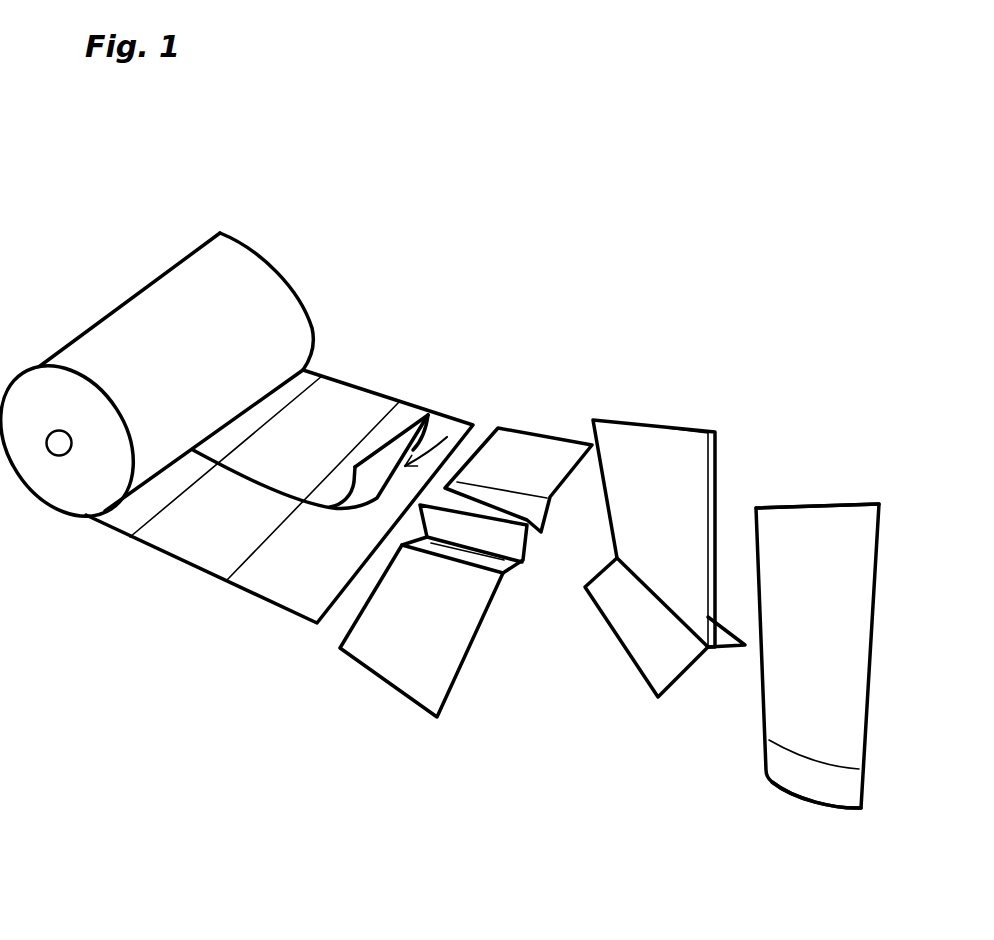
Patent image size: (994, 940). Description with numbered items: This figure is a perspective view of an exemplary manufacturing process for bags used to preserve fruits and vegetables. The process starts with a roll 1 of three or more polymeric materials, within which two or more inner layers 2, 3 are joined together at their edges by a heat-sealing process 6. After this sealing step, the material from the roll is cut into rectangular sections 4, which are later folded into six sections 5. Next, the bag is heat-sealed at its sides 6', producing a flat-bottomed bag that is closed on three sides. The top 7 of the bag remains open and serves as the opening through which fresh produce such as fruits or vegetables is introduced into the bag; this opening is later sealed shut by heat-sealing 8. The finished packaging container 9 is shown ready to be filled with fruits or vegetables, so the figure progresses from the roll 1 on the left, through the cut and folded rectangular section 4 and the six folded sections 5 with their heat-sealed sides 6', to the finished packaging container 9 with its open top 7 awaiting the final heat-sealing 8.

The roll 1 is at (242, 313).
The inner layer 2 is at (401, 421).
The inner layer 3 is at (440, 487).
The rectangular section 4 is at (193, 525).
The six sections 5 is at (505, 452).
The heat-sealing process 6 is at (310, 408).
The heat-sealed sides 6' is at (638, 520).
The top of the bag 7 is at (775, 502).
The heat-sealing 8 is at (838, 520).
The finished packaging container 9 is at (794, 679).